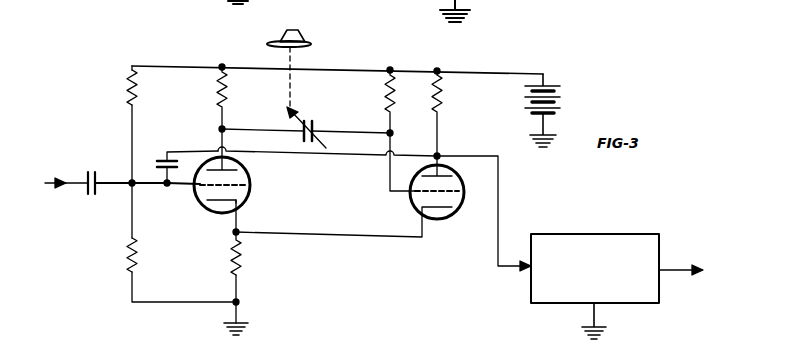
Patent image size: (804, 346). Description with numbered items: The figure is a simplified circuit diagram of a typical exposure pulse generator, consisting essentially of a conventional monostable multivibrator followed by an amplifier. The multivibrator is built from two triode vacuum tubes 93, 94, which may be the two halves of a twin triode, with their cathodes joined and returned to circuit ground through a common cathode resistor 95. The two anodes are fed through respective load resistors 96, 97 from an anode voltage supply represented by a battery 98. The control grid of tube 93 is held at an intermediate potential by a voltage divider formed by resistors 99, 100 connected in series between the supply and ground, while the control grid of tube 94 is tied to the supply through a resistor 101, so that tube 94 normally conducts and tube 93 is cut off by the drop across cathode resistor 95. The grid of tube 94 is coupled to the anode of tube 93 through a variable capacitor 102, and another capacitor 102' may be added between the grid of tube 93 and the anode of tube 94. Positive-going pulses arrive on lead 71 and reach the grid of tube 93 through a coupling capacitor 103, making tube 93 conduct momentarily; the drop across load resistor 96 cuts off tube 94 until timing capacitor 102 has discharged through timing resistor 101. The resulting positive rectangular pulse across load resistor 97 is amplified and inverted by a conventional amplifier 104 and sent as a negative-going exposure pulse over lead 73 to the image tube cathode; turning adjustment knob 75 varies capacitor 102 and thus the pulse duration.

The lead 71 is at (68, 186).
The lead 73 is at (670, 268).
The adjustment knob 75 is at (300, 37).
The triode vacuum tube 93 is at (206, 208).
The triode vacuum tube 94 is at (409, 208).
The common cathode resistor 95 is at (232, 268).
The load resistor 96 is at (218, 99).
The load resistor 97 is at (443, 97).
The battery 98 is at (552, 82).
The resistor 99 is at (128, 99).
The resistor 100 is at (126, 262).
The timing resistor 101 is at (386, 96).
The variable timing capacitor 102 is at (307, 123).
The capacitor 102' is at (179, 160).
The coupling capacitor 103 is at (100, 158).
The amplifier 104 is at (612, 214).